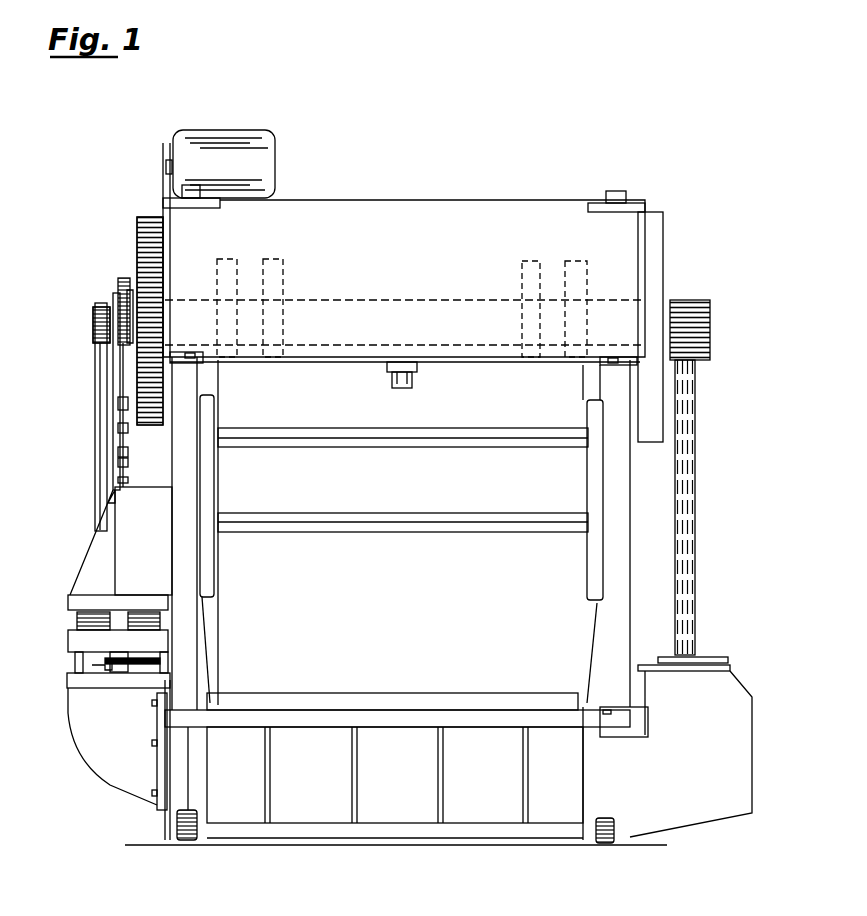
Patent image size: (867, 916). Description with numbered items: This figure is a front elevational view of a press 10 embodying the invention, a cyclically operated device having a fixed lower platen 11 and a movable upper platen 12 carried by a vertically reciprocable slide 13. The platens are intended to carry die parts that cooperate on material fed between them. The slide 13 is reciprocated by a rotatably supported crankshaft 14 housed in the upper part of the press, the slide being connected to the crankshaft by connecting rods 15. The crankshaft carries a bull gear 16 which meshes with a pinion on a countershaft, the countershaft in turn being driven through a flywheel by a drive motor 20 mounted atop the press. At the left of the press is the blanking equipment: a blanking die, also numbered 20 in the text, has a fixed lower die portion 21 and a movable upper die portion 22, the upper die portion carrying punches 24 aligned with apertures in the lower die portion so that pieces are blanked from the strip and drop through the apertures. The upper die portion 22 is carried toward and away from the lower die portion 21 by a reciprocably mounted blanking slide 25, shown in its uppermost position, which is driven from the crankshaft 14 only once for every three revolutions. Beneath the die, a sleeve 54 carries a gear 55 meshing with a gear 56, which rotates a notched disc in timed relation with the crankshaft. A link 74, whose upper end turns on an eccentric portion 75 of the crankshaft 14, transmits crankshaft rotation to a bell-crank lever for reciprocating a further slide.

The press 10 is at (548, 120).
The fixed lower platen 11 is at (410, 693).
The movable upper platen 12 is at (304, 525).
The vertically reciprocable slide 13 is at (451, 497).
The crankshaft 14 is at (348, 318).
The connecting rods 15 is at (258, 342).
The bull gear 16 is at (137, 252).
The drive motor 20 is at (228, 147).
The fixed lower die portion 21 is at (70, 641).
The movable upper die portion 22 is at (75, 607).
The punches 24 is at (155, 622).
The blanking slide 25 is at (88, 573).
The sleeve 54 is at (100, 658).
The gear 55 is at (118, 666).
The gear 56 is at (160, 661).
The link 74 is at (98, 465).
The eccentric portion 75 is at (97, 335).